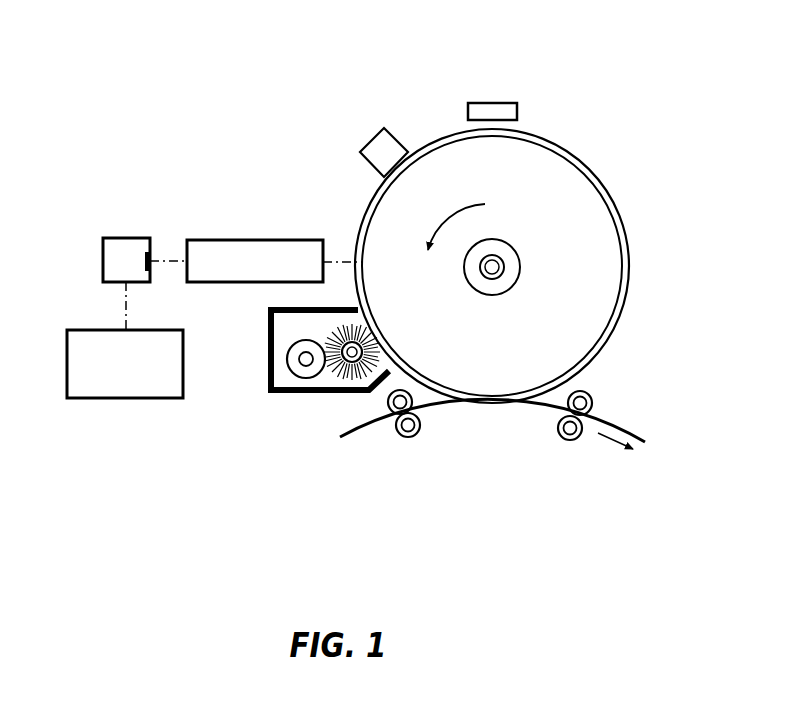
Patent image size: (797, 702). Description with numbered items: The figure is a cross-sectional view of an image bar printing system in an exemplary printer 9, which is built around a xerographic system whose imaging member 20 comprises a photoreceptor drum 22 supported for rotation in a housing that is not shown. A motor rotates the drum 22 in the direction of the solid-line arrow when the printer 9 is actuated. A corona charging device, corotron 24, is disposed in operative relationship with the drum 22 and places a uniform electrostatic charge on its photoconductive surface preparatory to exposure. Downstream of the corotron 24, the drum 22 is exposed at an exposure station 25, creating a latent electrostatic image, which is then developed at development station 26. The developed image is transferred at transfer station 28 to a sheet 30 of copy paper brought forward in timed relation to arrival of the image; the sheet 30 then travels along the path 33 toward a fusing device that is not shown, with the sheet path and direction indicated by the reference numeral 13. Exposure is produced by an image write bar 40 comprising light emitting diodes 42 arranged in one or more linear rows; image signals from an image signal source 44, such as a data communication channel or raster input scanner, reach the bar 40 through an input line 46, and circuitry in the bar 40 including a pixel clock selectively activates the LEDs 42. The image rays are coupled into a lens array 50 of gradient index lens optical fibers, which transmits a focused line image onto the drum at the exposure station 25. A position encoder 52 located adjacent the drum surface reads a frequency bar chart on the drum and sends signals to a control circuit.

The printer 9 is at (315, 86).
The copy sheet 13 is at (643, 414).
The imaging member 20 is at (611, 160).
The photoreceptor drum 22 is at (582, 163).
The corotron 24 is at (393, 137).
The exposure station 25 is at (360, 262).
The development station 26 is at (240, 368).
The transfer station 28 is at (473, 393).
The sheet of copy paper 30 is at (358, 432).
The sheet path 33 is at (490, 380).
The image write bar 40 is at (110, 253).
The light emitting diodes 42 is at (146, 262).
The image signal source 44 is at (102, 398).
The input line 46 is at (124, 305).
The lens array 50 is at (258, 240).
The position encoder 52 is at (498, 103).